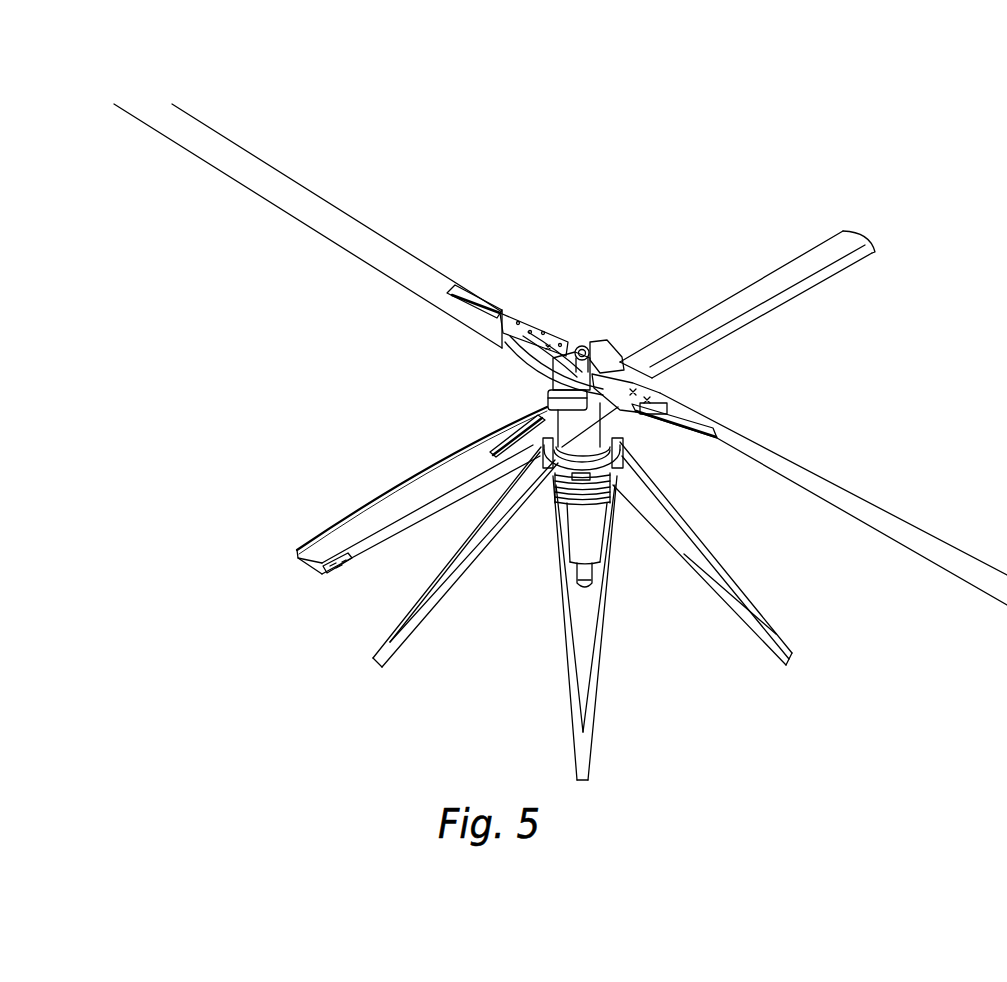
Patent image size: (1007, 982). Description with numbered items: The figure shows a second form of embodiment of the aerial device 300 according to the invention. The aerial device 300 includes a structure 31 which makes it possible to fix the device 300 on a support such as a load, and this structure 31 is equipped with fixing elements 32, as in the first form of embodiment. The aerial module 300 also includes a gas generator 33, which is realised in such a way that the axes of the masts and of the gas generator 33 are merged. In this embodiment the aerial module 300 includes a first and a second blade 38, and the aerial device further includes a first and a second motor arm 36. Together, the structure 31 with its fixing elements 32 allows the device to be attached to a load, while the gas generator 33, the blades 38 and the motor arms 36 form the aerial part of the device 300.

The aerial device 300 is at (330, 405).
The blade 38 is at (335, 220).
The motor arm 36 is at (438, 478).
The gas generator 33 is at (578, 535).
The fixing element 32 is at (685, 553).
The structure 31 is at (348, 665).